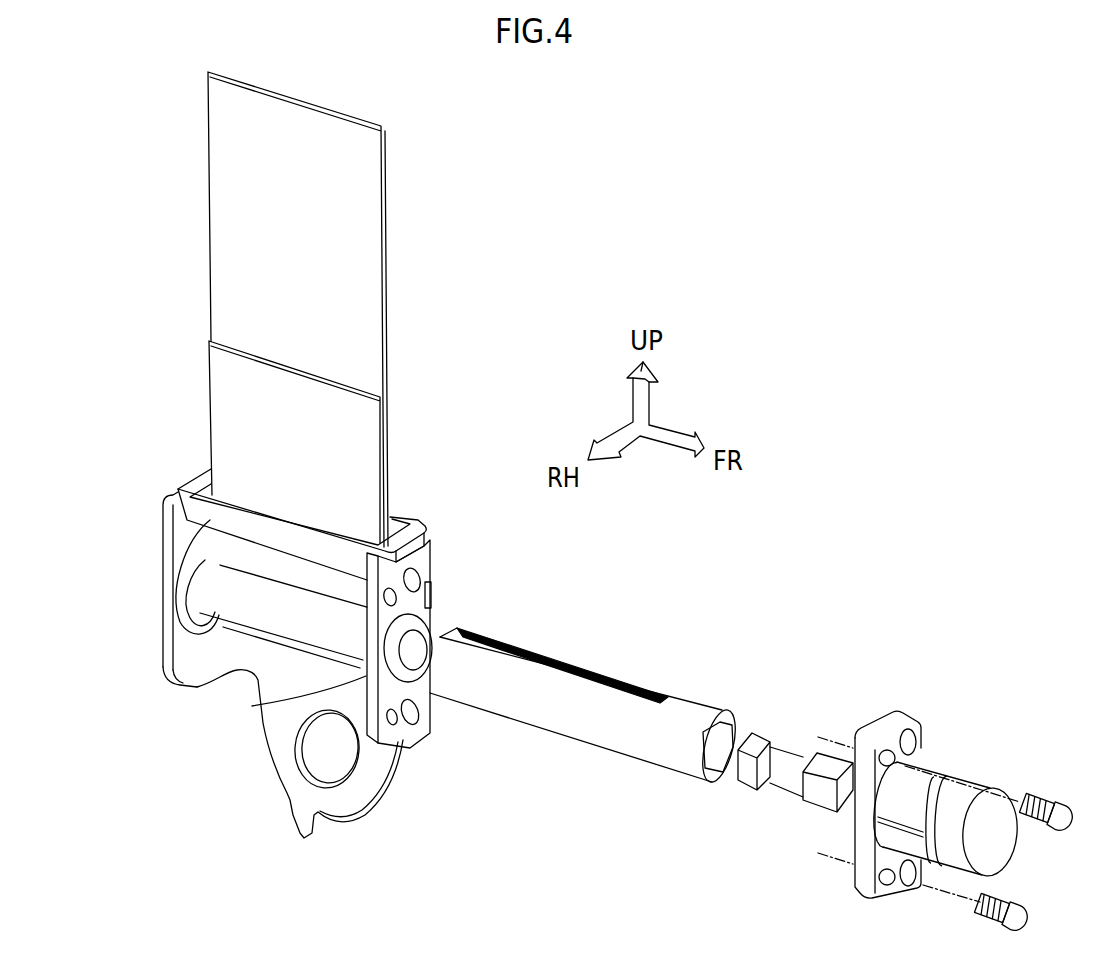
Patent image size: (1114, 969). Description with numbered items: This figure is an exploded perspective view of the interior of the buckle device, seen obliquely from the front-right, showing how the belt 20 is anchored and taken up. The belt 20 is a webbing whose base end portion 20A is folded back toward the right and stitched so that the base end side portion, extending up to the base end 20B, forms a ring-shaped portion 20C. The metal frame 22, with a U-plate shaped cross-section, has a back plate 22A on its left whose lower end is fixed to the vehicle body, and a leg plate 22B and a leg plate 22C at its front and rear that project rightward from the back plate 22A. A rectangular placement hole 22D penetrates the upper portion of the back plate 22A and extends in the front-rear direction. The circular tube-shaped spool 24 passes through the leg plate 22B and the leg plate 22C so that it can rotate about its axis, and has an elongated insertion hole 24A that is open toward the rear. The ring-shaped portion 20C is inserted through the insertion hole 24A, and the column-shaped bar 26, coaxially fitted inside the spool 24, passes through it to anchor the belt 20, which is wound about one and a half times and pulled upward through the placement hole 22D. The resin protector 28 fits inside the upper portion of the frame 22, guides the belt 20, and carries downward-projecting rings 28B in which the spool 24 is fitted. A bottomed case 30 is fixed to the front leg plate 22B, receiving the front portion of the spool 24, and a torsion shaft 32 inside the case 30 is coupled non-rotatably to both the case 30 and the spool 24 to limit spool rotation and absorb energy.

The belt 20 is at (301, 309).
The base end portion 20A is at (232, 387).
The base end 20B is at (213, 342).
The ring-shaped portion 20C is at (389, 450).
The frame 22 is at (291, 665).
The back plate 22A is at (268, 760).
The leg plate 22B is at (424, 738).
The leg plate 22C is at (175, 657).
The rectangular placement hole 22D is at (247, 670).
The spool 24 is at (586, 702).
The insertion hole 24A is at (563, 667).
The bar 26 is at (430, 641).
The protector 28 is at (243, 596).
The rings 28B is at (197, 582).
The case 30 is at (950, 763).
The torsion shaft 32 is at (802, 743).